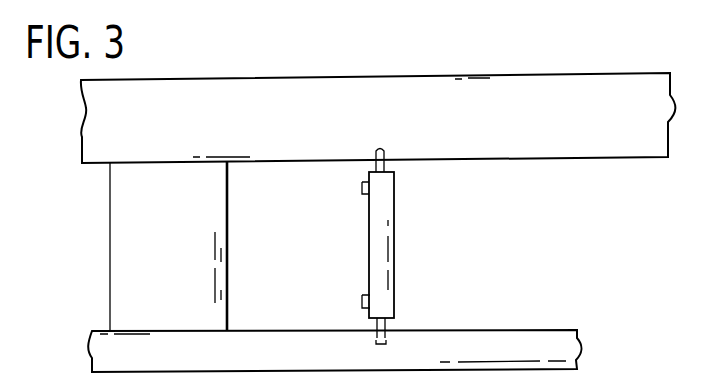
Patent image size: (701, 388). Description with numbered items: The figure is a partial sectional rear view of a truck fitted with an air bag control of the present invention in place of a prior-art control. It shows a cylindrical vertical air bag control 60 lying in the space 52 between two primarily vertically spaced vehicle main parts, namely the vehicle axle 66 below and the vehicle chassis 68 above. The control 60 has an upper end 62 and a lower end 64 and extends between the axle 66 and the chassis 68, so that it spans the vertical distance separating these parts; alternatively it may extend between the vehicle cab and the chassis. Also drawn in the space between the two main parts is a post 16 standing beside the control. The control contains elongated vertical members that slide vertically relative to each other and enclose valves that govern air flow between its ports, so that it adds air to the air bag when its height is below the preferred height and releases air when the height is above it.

The post 16 is at (229, 290).
The space 52 is at (330, 247).
The air bag control 60 is at (417, 247).
The upper end 62 is at (395, 172).
The lower end 64 is at (395, 312).
The vehicle axle 66 is at (500, 330).
The vehicle chassis 68 is at (538, 158).